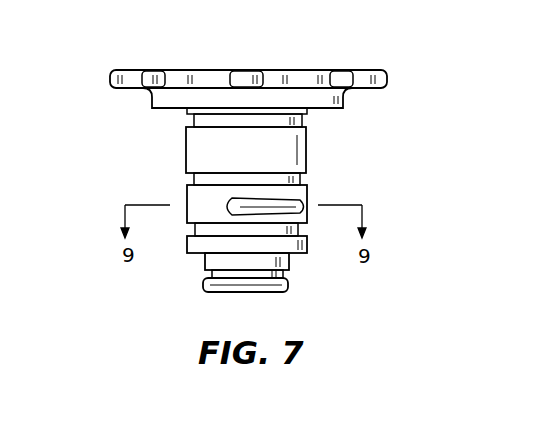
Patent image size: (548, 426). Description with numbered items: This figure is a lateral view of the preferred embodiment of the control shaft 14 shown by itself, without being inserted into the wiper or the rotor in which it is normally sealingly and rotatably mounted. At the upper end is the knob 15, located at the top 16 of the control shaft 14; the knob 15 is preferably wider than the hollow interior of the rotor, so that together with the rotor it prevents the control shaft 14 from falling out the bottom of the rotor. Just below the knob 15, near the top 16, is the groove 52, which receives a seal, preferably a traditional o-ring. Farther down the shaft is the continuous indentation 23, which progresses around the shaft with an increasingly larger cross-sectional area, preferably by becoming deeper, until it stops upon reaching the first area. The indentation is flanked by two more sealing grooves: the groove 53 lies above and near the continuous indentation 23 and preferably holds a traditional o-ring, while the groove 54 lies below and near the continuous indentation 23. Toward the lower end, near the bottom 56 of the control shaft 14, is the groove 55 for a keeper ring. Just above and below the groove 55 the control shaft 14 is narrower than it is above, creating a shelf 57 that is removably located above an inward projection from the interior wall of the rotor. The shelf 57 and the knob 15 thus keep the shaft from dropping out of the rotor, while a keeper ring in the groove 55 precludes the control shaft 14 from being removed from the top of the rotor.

The control shaft 14 is at (112, 172).
The knob 15 is at (241, 78).
The top of the control shaft 16 is at (266, 110).
The groove near the top of the control shaft 52 is at (192, 120).
The groove above the continuous indentation 53 is at (192, 179).
The continuous indentation 23 is at (305, 205).
The groove below the continuous indentation 54 is at (194, 230).
The shelf 57 is at (193, 253).
The groove for a keeper ring 55 is at (283, 273).
The bottom of the control shaft 56 is at (232, 292).